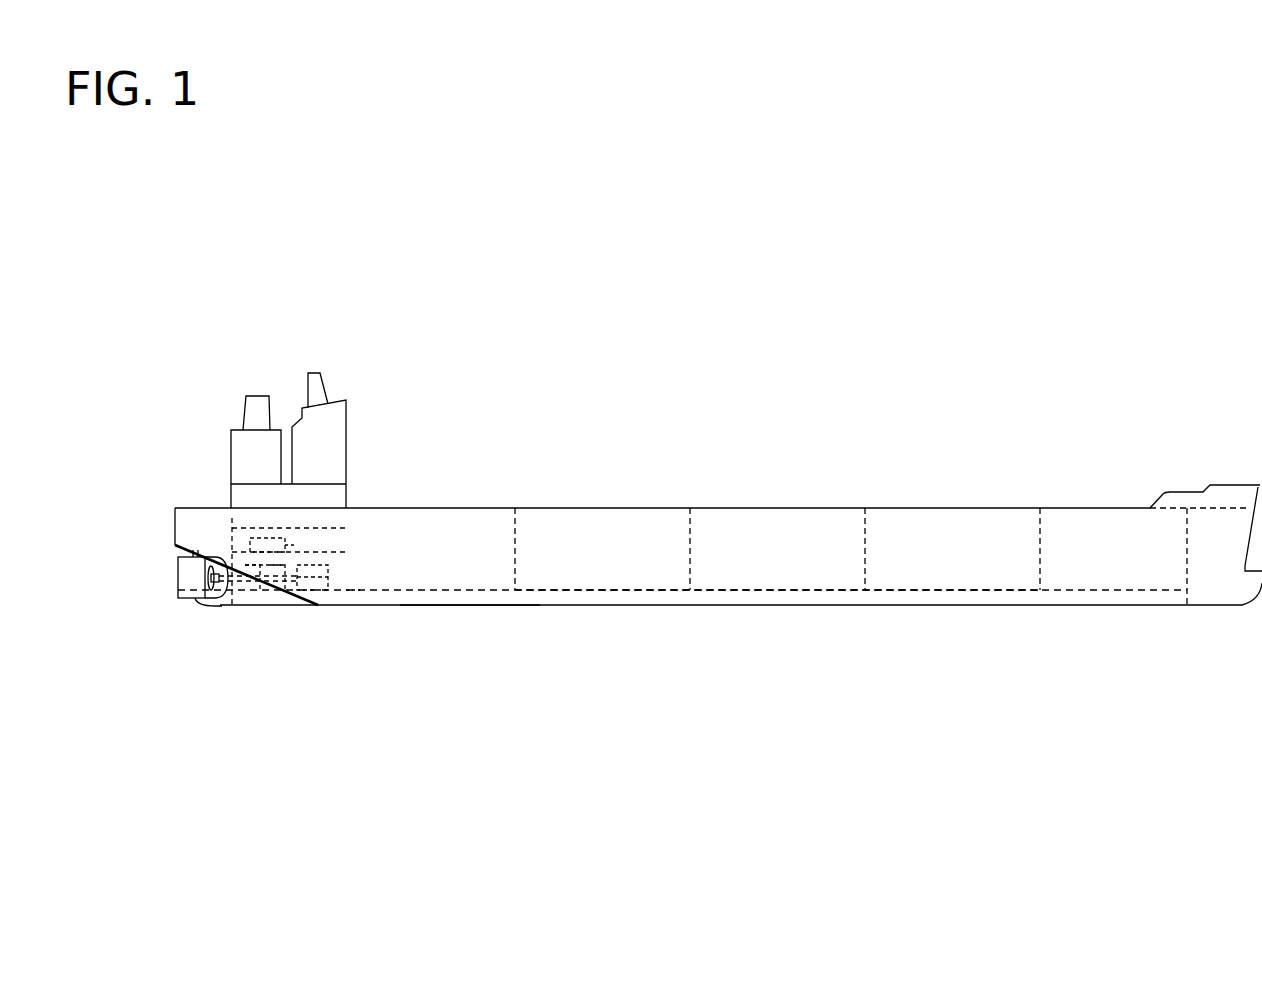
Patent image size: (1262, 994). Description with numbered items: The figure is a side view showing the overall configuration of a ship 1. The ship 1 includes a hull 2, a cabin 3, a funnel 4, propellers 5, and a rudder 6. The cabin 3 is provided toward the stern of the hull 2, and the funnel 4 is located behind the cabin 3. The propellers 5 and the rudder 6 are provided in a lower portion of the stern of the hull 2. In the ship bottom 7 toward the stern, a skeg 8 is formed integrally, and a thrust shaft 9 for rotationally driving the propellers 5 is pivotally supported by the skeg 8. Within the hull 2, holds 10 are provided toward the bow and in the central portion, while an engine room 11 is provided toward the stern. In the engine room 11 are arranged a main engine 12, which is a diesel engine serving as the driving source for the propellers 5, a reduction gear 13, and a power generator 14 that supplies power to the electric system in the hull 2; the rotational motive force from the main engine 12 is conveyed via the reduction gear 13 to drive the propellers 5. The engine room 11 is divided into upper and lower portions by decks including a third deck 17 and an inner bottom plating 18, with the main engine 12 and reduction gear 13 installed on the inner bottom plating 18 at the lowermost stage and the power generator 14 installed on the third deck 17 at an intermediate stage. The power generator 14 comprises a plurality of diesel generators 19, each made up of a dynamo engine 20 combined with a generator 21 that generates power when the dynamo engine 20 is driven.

The ship 1 is at (1093, 350).
The hull 2 is at (771, 591).
The cabin 3 is at (342, 424).
The funnel 4 is at (244, 412).
The propellers 5 is at (192, 600).
The rudder 6 is at (178, 590).
The ship bottom 7 is at (468, 606).
The skeg 8 is at (218, 602).
The thrust shaft 9 is at (242, 604).
The holds 10 is at (925, 591).
The engine room 11 is at (321, 501).
The main engine 12 is at (310, 604).
The reduction gear 13 is at (290, 604).
The power generator 14 is at (259, 524).
The third deck 17 is at (330, 553).
The inner bottom plating 18 is at (355, 585).
The diesel generator 19 is at (232, 760).
The dynamo engine 20 is at (262, 604).
The generator 21 is at (280, 604).